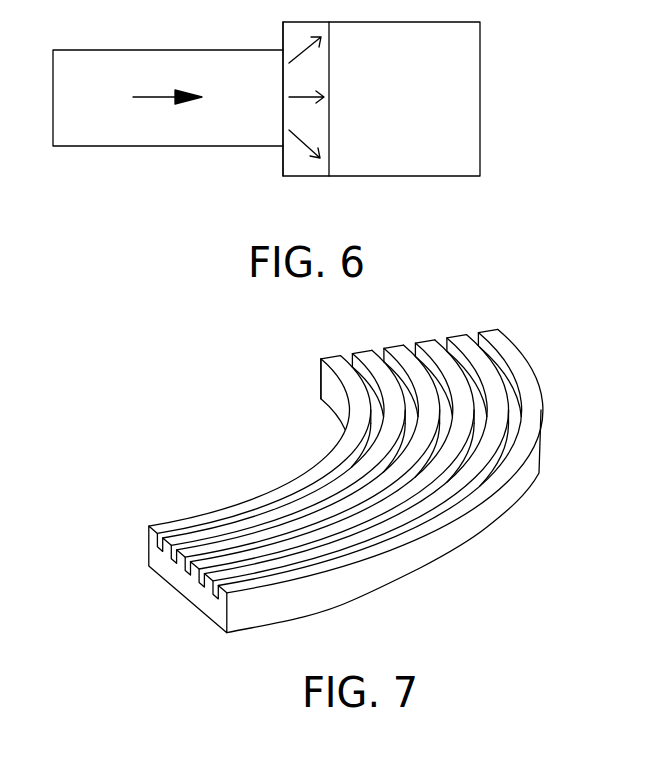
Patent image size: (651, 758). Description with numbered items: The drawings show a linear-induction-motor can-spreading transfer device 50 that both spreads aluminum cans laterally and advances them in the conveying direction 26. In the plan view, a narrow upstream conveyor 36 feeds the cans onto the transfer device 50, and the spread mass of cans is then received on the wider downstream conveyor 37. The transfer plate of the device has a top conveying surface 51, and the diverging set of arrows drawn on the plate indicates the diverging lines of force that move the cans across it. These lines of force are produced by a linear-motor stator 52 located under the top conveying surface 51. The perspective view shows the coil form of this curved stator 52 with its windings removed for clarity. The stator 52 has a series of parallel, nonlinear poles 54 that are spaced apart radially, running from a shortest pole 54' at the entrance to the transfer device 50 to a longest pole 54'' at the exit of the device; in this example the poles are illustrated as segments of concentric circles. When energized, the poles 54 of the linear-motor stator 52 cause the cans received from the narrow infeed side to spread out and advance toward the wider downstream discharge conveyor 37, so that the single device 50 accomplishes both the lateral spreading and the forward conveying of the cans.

In FIG. 6, the conveying direction 26 is at (149, 97).
In FIG. 6, the upstream conveyor 36 is at (137, 138).
In FIG. 6, the downstream conveyor 37 is at (452, 171).
In FIG. 6, the LIM can-spreading transfer device 50 is at (307, 174).
In FIG. 6, the top conveying surface 51 is at (302, 27).
In FIG. 7, the linear-motor stator 52 is at (463, 548).
In FIG. 7, the poles 54 is at (336, 453).
In FIG. 7, the shortest pole 54' is at (260, 445).
In FIG. 7, the longest pole 54'' is at (393, 460).